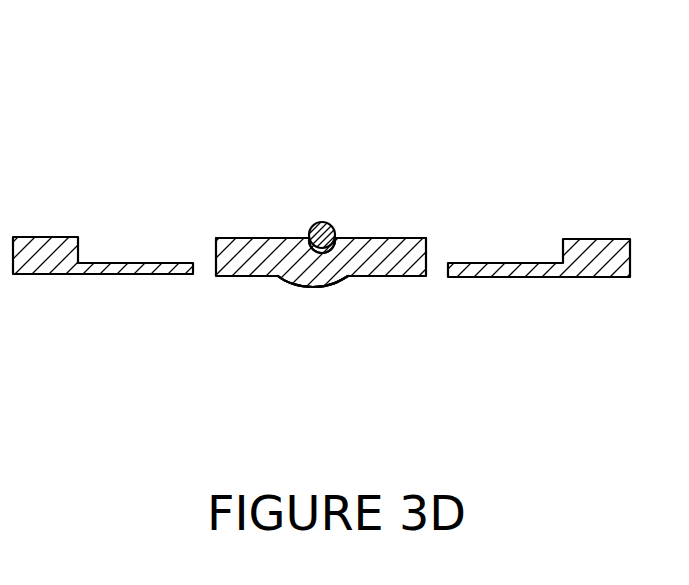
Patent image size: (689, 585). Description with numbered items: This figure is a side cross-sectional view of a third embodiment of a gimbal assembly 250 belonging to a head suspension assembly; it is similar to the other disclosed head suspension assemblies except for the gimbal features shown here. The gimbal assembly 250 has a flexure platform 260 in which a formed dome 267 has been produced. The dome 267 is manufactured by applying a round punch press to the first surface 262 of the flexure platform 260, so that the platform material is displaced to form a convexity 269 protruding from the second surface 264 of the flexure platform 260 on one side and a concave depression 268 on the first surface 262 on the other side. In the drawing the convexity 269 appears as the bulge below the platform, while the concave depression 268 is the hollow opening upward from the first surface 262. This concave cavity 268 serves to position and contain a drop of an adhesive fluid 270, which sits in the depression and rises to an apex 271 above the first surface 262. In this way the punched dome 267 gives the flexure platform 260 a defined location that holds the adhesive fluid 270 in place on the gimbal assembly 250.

The gimbal assembly 250 is at (243, 168).
The flexure platform 260 is at (347, 260).
The first surface 262 is at (417, 237).
The second surface 264 is at (275, 276).
The formed dome 267 is at (348, 280).
The concave depression 268 is at (320, 247).
The convexity 269 is at (323, 290).
The adhesive fluid 270 is at (317, 245).
The apex 271 is at (322, 238).